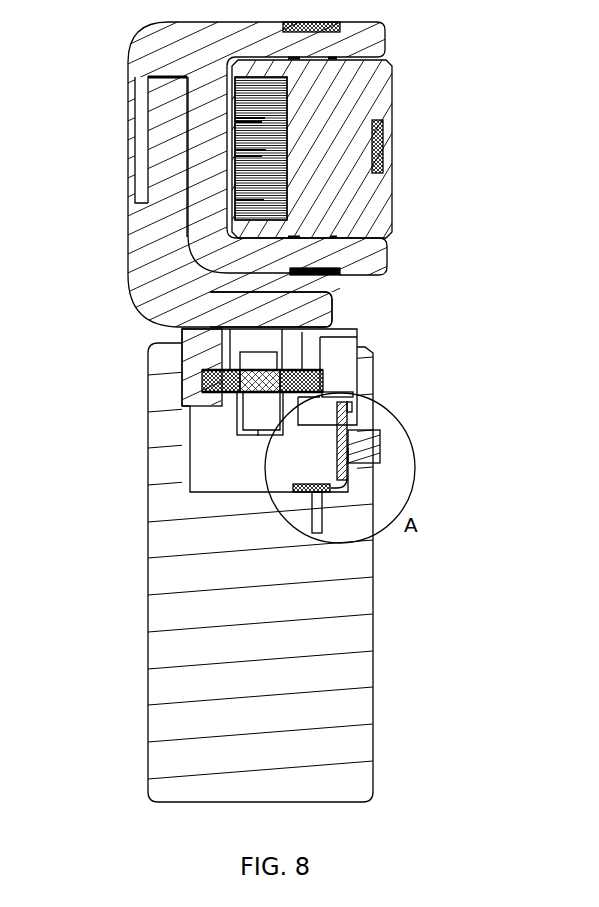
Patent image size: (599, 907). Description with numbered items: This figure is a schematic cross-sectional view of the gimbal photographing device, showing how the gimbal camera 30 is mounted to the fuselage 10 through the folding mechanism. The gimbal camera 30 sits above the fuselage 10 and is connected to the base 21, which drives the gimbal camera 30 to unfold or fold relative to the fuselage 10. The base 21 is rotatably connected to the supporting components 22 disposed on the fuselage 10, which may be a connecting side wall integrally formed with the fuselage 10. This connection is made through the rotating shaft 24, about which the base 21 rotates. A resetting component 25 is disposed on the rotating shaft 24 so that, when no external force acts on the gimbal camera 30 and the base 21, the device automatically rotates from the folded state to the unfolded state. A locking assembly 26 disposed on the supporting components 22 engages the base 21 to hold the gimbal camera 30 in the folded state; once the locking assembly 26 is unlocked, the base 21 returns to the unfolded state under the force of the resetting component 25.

The fuselage 10 is at (323, 633).
The base 21 is at (335, 327).
The supporting components 22 is at (190, 458).
The rotating shaft 24 is at (312, 351).
The resetting component 25 is at (322, 382).
The locking assembly 26 is at (337, 442).
The gimbal camera 30 is at (393, 143).